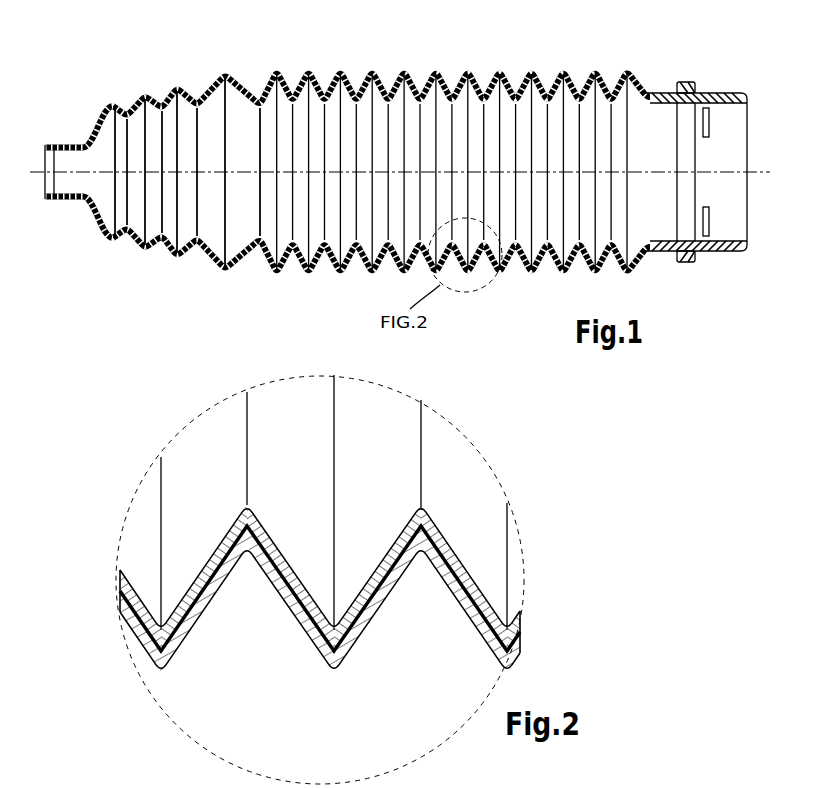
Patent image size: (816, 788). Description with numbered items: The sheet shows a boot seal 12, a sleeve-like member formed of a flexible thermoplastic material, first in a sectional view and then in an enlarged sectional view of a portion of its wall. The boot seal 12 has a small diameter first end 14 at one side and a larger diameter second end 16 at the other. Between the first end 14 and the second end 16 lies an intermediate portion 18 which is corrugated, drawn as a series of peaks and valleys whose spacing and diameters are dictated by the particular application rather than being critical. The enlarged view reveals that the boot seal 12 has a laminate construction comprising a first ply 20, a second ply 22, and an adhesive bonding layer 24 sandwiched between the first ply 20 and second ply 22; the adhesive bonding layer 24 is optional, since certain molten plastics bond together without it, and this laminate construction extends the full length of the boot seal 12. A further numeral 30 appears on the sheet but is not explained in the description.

In FIG. 1, the boot seal 12 is at (411, 45).
In FIG. 2, the boot seal 12 is at (455, 485).
In FIG. 1, the first end 14 is at (62, 143).
In FIG. 1, the second end 16 is at (703, 93).
In FIG. 1, the intermediate portion 18 is at (534, 60).
In FIG. 2, the first ply 20 is at (267, 519).
In FIG. 2, the second ply 22 is at (268, 578).
In FIG. 2, the adhesive bonding layer 24 is at (380, 587).
In FIG. 2, the boot assembly 30 is at (602, 783).